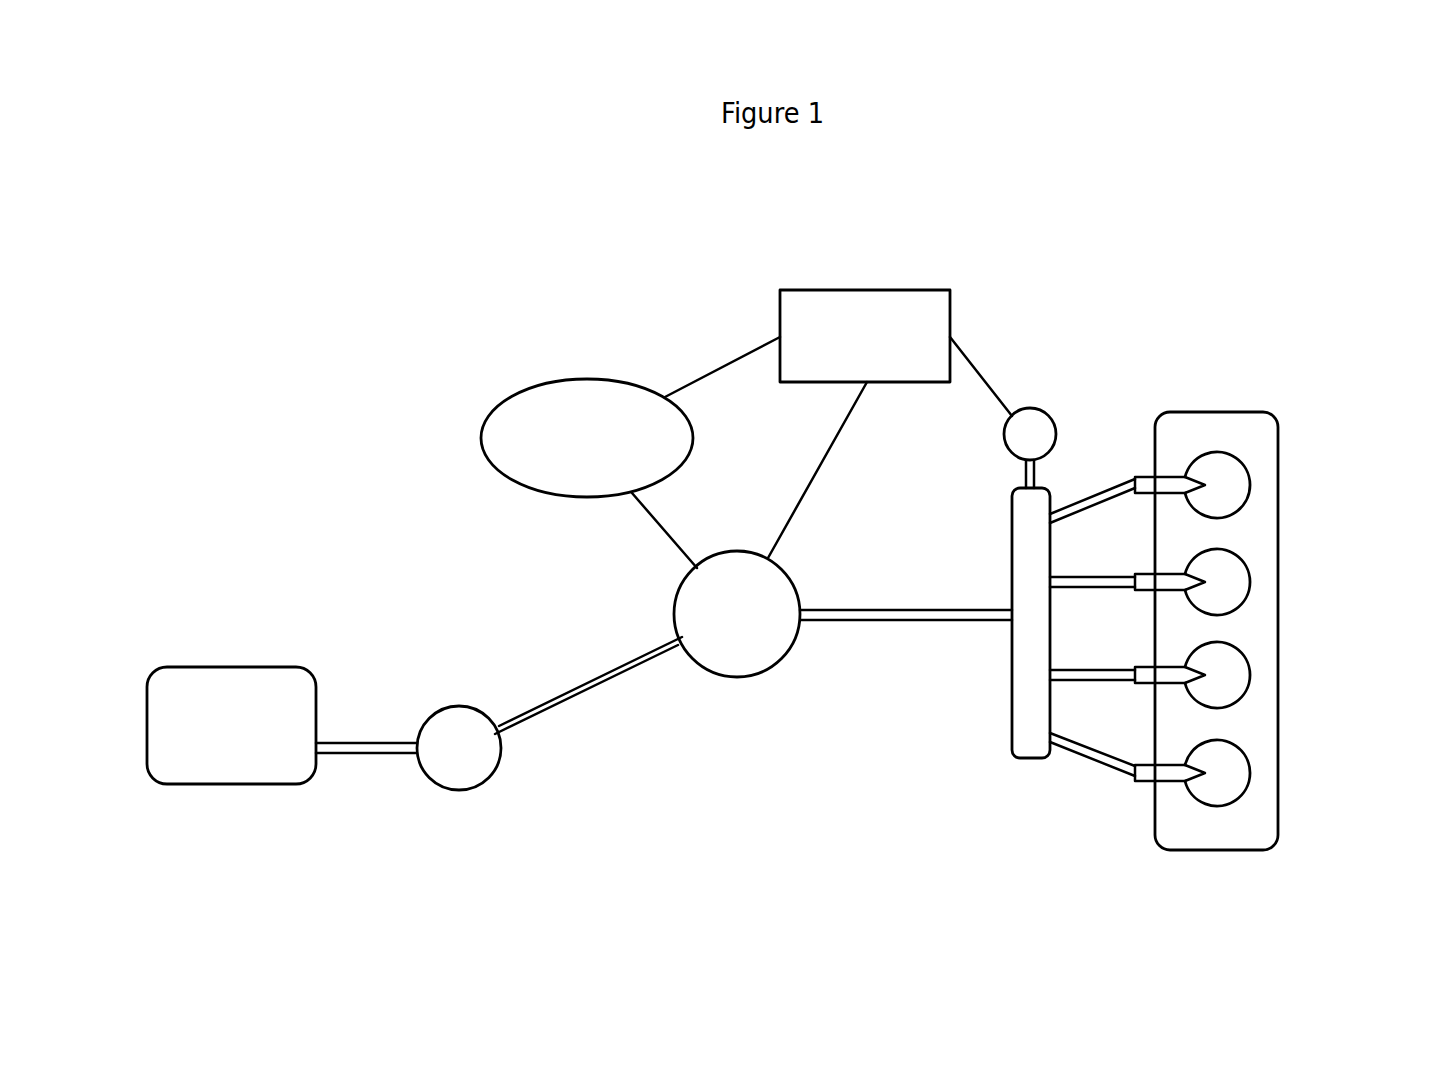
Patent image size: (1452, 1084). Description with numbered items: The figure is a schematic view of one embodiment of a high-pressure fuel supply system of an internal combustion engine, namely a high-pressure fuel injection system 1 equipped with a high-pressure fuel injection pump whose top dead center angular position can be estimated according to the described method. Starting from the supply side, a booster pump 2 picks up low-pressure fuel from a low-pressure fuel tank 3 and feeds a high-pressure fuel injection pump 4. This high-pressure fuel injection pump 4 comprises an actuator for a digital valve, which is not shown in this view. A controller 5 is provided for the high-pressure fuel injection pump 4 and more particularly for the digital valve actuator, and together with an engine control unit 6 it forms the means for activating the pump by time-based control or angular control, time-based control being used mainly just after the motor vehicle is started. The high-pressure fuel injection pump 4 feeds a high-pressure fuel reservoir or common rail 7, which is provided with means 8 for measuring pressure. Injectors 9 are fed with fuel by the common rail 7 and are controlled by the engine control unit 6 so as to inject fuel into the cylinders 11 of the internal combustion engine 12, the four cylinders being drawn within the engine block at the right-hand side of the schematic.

The high-pressure fuel injection system 1 is at (625, 302).
The booster pump 2 is at (460, 748).
The low-pressure fuel tank 3 is at (226, 714).
The high-pressure fuel injection pump 4 is at (737, 650).
The controller 5 is at (552, 428).
The engine control unit 6 is at (855, 318).
The common rail 7 is at (1030, 722).
The means for measuring pressure 8 is at (1028, 436).
The injectors 9 is at (1146, 487).
The cylinders 11 is at (1230, 485).
The internal combustion engine 12 is at (1226, 434).